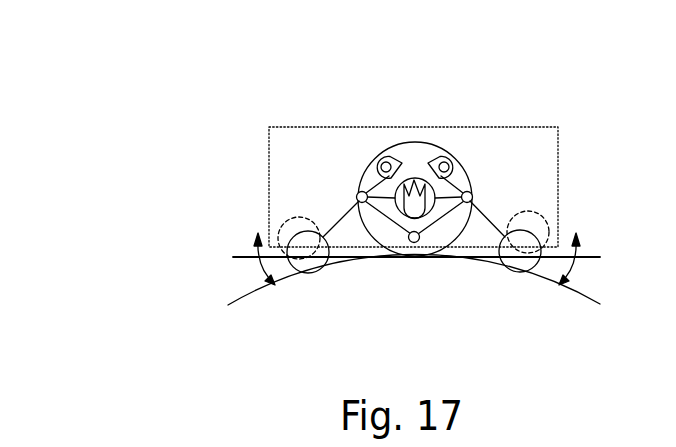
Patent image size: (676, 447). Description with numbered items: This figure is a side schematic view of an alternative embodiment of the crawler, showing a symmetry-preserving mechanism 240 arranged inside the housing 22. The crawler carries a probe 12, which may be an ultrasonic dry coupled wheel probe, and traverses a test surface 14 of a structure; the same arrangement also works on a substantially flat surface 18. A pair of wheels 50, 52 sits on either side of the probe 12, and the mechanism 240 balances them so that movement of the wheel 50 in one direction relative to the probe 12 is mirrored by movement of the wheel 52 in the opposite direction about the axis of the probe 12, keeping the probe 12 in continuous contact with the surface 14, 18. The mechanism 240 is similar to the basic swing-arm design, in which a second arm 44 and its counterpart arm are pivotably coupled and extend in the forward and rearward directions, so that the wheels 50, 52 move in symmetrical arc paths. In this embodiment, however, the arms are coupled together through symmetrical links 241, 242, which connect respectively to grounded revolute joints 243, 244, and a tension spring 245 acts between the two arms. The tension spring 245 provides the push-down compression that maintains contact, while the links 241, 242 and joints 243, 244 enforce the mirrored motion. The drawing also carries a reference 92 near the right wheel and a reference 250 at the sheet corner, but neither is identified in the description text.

The probe 12 is at (443, 213).
The test surface 14 is at (266, 290).
The substantially flat surface 18 is at (243, 256).
The housing 22 is at (560, 165).
The second arm 44 is at (348, 215).
The first wheel 50 is at (503, 266).
The first wheel 52 is at (313, 258).
The roller shifted position 92 is at (546, 218).
The mechanism 240 is at (474, 72).
The link 241 is at (483, 210).
The link 242 is at (370, 206).
The grounded revolute joint 243 is at (458, 160).
The grounded revolute joint 244 is at (380, 152).
The tension spring 245 is at (412, 178).
The sheet reference 250 is at (657, 436).